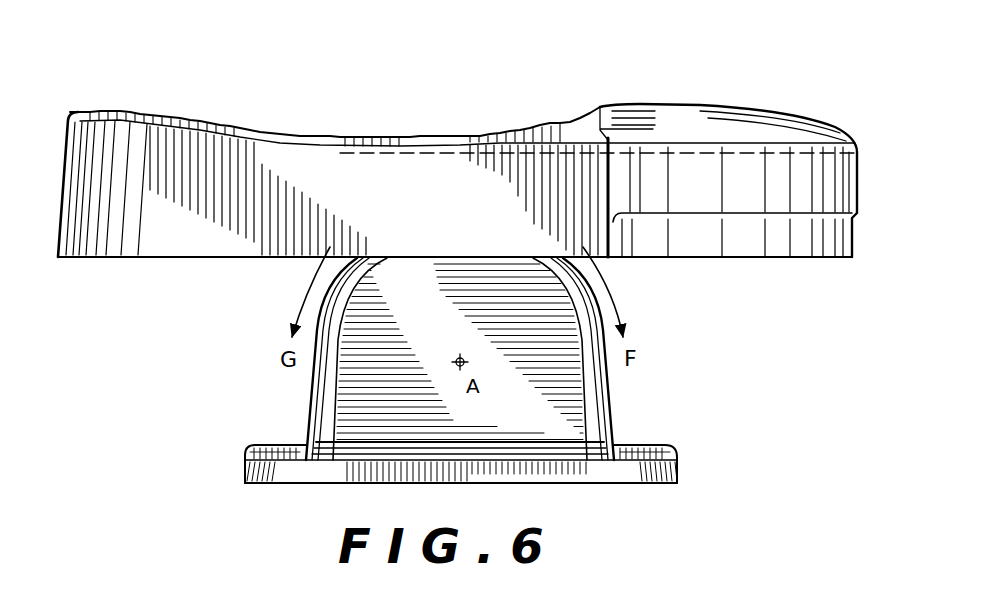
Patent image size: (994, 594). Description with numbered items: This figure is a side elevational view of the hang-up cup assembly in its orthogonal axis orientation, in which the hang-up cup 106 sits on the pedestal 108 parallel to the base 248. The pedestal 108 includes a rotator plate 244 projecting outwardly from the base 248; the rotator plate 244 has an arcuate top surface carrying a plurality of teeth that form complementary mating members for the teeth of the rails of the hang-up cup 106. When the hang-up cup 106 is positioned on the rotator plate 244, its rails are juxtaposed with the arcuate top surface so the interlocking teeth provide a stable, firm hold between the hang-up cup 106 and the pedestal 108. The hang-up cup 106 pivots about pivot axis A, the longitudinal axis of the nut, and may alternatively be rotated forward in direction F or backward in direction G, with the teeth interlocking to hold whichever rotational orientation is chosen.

The hang-up cup 106 is at (725, 105).
The rotator plate 244 is at (527, 373).
The pedestal 108 is at (675, 447).
The base 248 is at (677, 484).